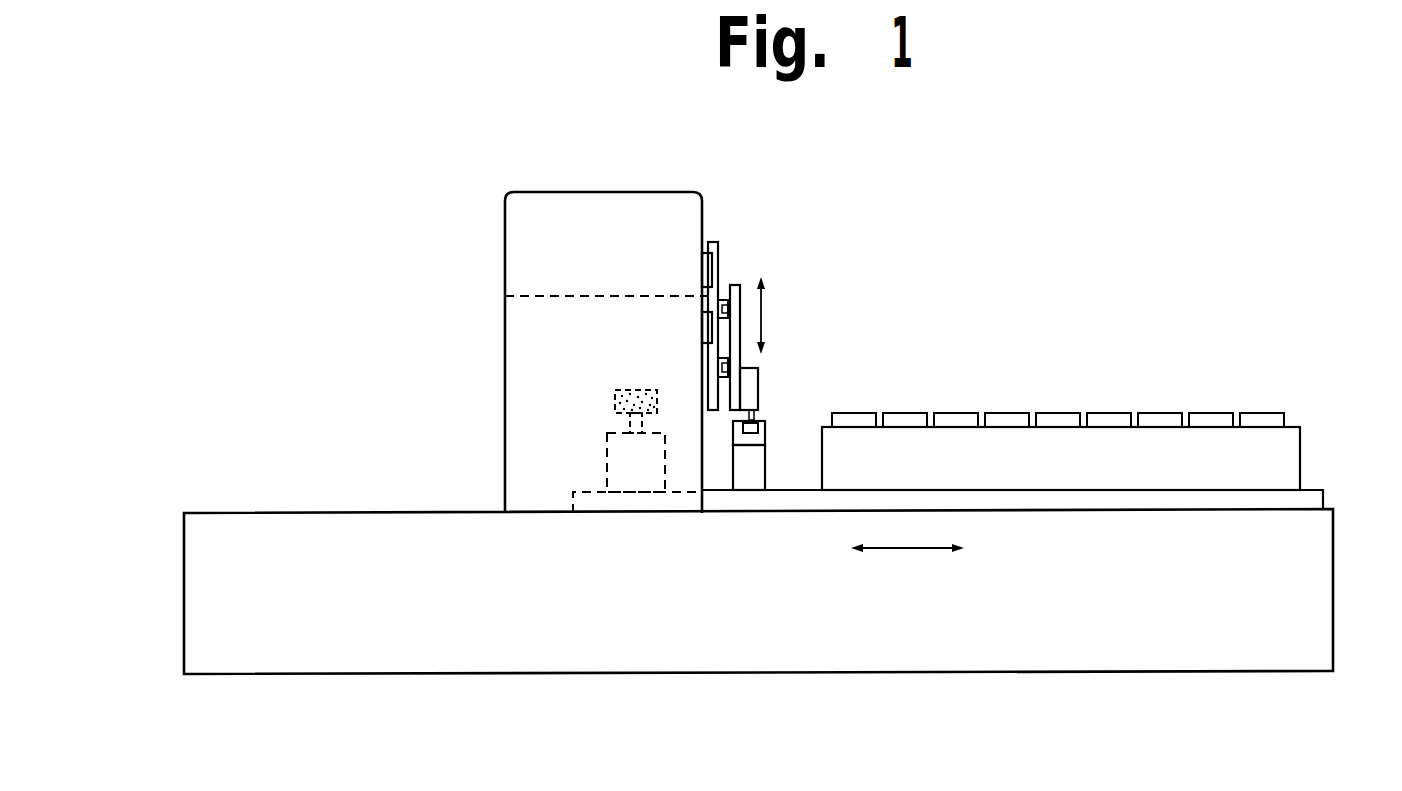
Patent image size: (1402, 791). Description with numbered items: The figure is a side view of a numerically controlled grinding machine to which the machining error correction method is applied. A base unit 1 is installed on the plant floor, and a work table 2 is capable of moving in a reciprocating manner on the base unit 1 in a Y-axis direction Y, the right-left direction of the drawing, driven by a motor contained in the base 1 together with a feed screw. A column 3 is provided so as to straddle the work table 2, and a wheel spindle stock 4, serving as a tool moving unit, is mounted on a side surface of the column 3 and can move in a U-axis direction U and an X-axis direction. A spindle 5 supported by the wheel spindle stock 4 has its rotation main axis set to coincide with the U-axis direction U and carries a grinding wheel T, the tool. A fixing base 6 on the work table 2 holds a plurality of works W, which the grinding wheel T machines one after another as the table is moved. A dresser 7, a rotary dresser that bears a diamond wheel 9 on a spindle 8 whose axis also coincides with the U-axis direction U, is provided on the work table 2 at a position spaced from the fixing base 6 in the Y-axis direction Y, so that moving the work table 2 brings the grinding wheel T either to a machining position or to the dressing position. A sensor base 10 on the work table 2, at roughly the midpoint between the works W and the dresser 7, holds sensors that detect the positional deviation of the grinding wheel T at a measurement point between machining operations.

The base unit 1 is at (1025, 650).
The work table 2 is at (1168, 490).
The column 3 is at (600, 192).
The wheel spindle stock 4 is at (734, 253).
The spindle 5 is at (748, 388).
The fixing base 6 is at (1290, 453).
The dresser 7 is at (598, 458).
The spindle 8 is at (605, 440).
The diamond wheel 9 is at (615, 401).
The sensor base 10 is at (747, 483).
The works W is at (948, 410).
The grinding wheel T is at (747, 430).
The U-axis direction U is at (777, 315).
The Y-axis direction Y is at (907, 568).